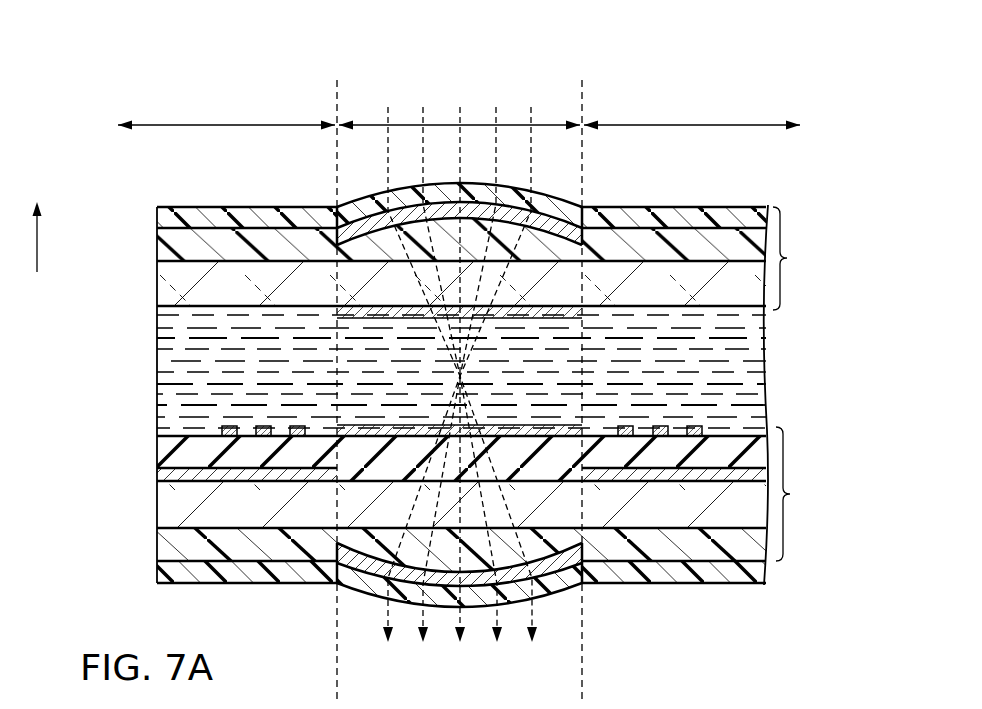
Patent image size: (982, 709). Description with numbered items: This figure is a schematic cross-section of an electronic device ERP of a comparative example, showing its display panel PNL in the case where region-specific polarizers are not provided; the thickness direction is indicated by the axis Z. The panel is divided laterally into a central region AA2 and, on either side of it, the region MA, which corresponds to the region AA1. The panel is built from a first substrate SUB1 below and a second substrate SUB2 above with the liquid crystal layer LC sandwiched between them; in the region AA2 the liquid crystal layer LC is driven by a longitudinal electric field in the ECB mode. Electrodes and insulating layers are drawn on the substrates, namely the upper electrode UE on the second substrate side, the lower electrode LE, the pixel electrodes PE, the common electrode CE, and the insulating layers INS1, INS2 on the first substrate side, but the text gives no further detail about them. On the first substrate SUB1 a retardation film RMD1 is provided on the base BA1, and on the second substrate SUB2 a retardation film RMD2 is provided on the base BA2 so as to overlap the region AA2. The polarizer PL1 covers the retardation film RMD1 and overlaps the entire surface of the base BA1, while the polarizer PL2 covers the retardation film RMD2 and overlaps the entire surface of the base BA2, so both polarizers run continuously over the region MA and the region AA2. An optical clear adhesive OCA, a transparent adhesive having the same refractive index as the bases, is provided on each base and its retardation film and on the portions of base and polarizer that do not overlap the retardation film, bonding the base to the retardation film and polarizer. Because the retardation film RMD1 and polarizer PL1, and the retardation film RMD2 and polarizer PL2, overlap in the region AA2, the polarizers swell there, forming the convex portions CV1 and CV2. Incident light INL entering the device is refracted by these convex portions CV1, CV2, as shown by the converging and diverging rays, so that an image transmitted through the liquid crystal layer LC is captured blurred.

The electronic device ERP is at (459, 65).
The display panel PNL is at (521, 41).
The region MA is at (459, 98).
The region AA1 is at (459, 98).
The region AA2 is at (459, 90).
The incident light INL is at (384, 39).
The convex portion CV2 is at (357, 187).
The retardation film RMD2 is at (573, 208).
The polarizer PL2 is at (162, 221).
The optical clear adhesive OCA is at (164, 251).
The base BA2 is at (167, 290).
The liquid crystal layer LC is at (164, 368).
The pixel electrode PE is at (228, 424).
The upper electrode UE is at (520, 319).
The lower electrode LE is at (397, 424).
The first insulating layer INS1 is at (389, 455).
The second insulating layer INS2 is at (172, 453).
The common electrode CE is at (162, 478).
The base BA1 is at (174, 508).
The polarizer PL1 is at (172, 576).
The retardation film RMD1 is at (378, 565).
The convex portion CV1 is at (559, 600).
The first substrate SUB1 is at (437, 532).
The second substrate SUB2 is at (466, 367).
The Z direction Z is at (36, 223).